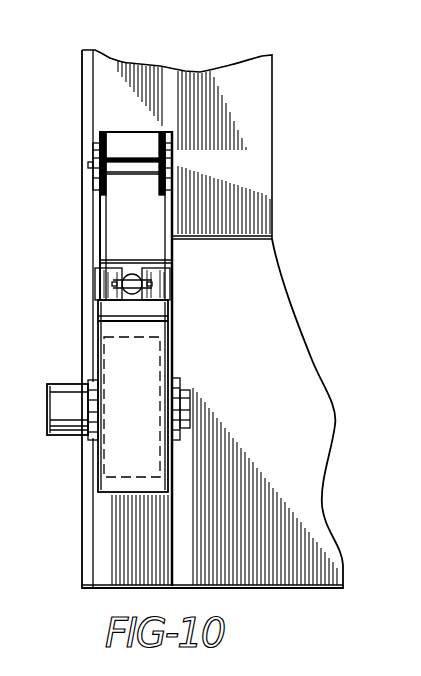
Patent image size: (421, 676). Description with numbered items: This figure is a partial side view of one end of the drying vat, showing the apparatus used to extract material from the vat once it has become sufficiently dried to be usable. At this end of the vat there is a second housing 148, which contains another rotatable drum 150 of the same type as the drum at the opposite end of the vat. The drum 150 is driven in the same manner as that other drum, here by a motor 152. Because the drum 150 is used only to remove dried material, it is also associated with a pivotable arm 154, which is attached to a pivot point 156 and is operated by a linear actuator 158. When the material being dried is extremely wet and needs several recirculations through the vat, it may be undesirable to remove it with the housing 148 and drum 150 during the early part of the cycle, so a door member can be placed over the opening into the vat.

The second housing 148 is at (163, 493).
The rotatable drum 150 is at (160, 467).
The motor 152 is at (67, 437).
The pivotable arm 154 is at (173, 252).
The pivot point 156 is at (174, 168).
The linear actuator 158 is at (131, 273).